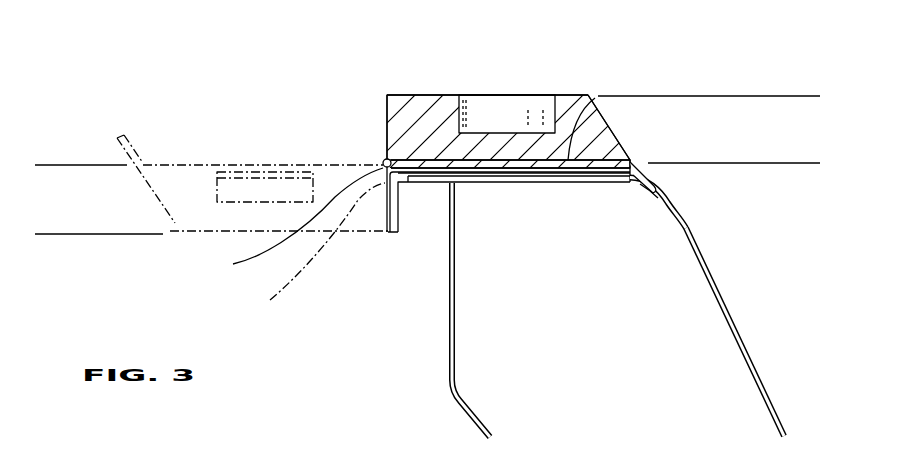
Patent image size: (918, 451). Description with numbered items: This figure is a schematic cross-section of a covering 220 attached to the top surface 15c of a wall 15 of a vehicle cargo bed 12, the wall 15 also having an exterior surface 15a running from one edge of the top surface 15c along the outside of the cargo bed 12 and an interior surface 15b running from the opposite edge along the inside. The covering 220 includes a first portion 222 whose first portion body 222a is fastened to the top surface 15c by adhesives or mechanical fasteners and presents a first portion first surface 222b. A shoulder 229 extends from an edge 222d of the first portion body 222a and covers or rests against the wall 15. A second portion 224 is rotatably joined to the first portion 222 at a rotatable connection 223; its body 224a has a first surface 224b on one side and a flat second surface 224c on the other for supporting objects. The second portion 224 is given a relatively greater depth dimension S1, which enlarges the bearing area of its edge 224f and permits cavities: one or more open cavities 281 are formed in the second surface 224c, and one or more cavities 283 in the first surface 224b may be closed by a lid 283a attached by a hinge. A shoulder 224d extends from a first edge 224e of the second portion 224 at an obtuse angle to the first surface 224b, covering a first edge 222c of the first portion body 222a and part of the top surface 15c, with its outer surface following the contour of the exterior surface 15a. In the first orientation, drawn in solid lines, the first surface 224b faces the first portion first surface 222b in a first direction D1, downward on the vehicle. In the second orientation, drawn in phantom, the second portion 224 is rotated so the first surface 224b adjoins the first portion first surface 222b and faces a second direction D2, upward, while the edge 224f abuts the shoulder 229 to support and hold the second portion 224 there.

The covering 220 is at (152, 94).
The first direction D1 is at (82, 156).
The second direction D2 is at (102, 30).
The depth dimension S1 is at (58, 167).
The cargo bed 12 is at (331, 344).
The wall 15 is at (735, 296).
The exterior surface 15a is at (752, 358).
The interior surface 15b is at (447, 348).
The top surface 15c is at (572, 182).
The first portion 222 is at (519, 178).
The first portion body 222a is at (487, 168).
The first portion first surface 222b is at (607, 133).
The first edge of first portion body 222c is at (633, 186).
The edge of first portion body 222d is at (286, 220).
The rotatable connection 223 is at (382, 162).
The second portion 224 is at (578, 90).
The second portion body 224a is at (631, 158).
The second portion first surface 224b is at (187, 165).
The second portion second surface 224c is at (510, 95).
The shoulder 224d is at (657, 172).
The first edge of second portion 224e is at (650, 196).
The edge of second portion 224f is at (386, 118).
The shoulder 229 is at (390, 196).
The open cavity 281 is at (536, 110).
The cavity 283 is at (242, 193).
The lid 283a is at (267, 172).